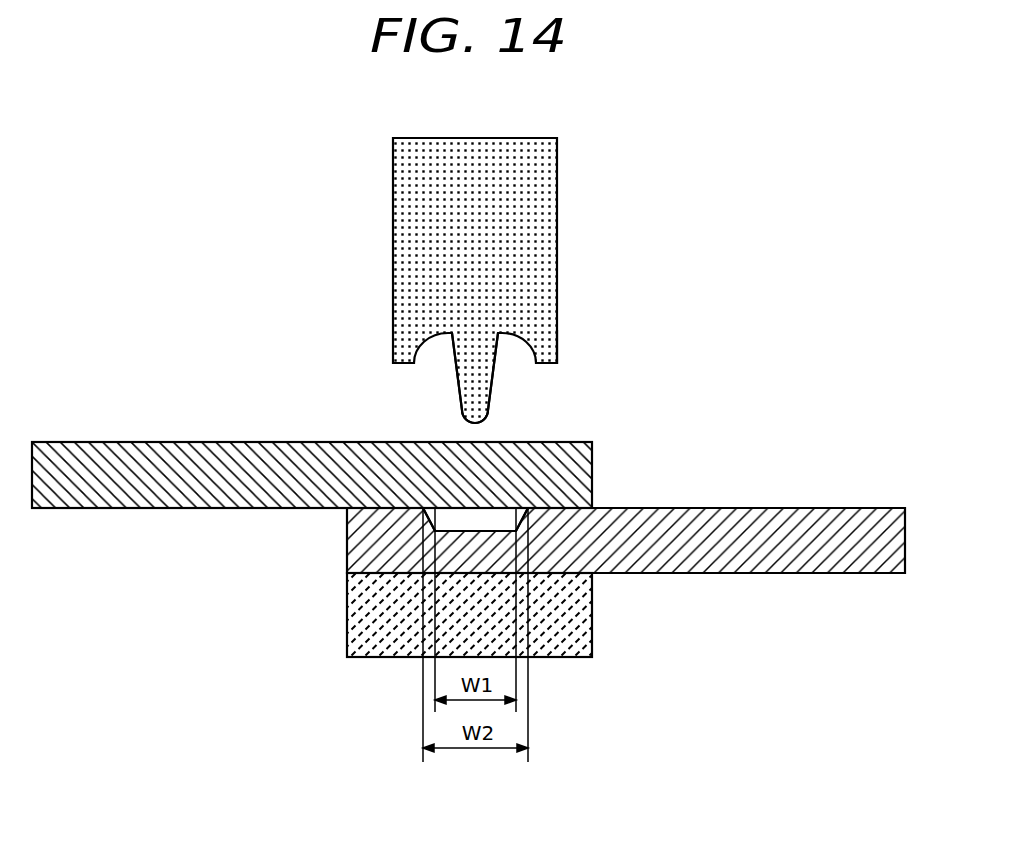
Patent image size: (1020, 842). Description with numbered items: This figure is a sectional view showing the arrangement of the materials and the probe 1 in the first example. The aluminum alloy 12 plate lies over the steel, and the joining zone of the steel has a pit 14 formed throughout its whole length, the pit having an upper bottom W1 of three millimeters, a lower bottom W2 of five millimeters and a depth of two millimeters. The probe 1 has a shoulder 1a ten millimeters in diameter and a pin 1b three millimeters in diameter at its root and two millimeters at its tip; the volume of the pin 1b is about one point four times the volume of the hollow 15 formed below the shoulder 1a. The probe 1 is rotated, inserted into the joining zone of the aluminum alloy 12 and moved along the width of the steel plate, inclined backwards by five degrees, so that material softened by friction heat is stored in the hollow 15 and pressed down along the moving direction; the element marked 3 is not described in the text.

The probe 1 is at (520, 243).
The shoulder 1a is at (545, 340).
The pin 1b is at (476, 400).
The aluminum alloy 12 is at (100, 452).
The substrate 3 is at (790, 557).
The pit 14 is at (447, 520).
The hollow 15 is at (437, 355).